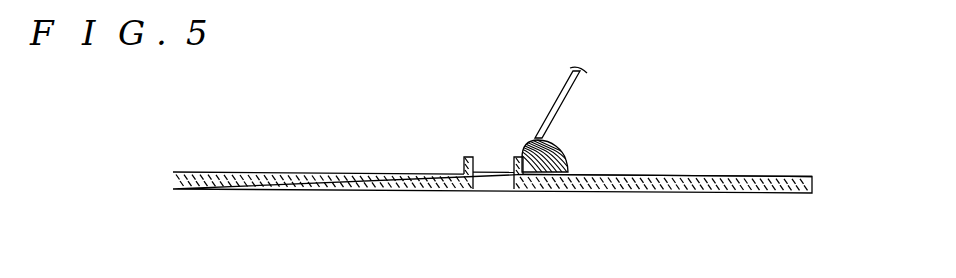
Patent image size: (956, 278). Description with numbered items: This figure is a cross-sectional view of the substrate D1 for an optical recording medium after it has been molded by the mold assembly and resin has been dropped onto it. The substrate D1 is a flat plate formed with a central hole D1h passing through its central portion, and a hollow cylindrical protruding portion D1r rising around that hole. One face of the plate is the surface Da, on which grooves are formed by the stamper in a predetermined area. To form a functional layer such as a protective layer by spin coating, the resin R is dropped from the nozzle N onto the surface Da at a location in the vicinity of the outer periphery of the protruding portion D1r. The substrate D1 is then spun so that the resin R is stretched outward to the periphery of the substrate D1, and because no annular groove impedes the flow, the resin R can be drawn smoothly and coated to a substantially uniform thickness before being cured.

The substrate D1 is at (813, 183).
The surface Da is at (673, 173).
The hollow cylindrical protruding portion D1r is at (463, 160).
The central hole D1h is at (492, 188).
The resin R is at (566, 157).
The nozzle N is at (573, 92).